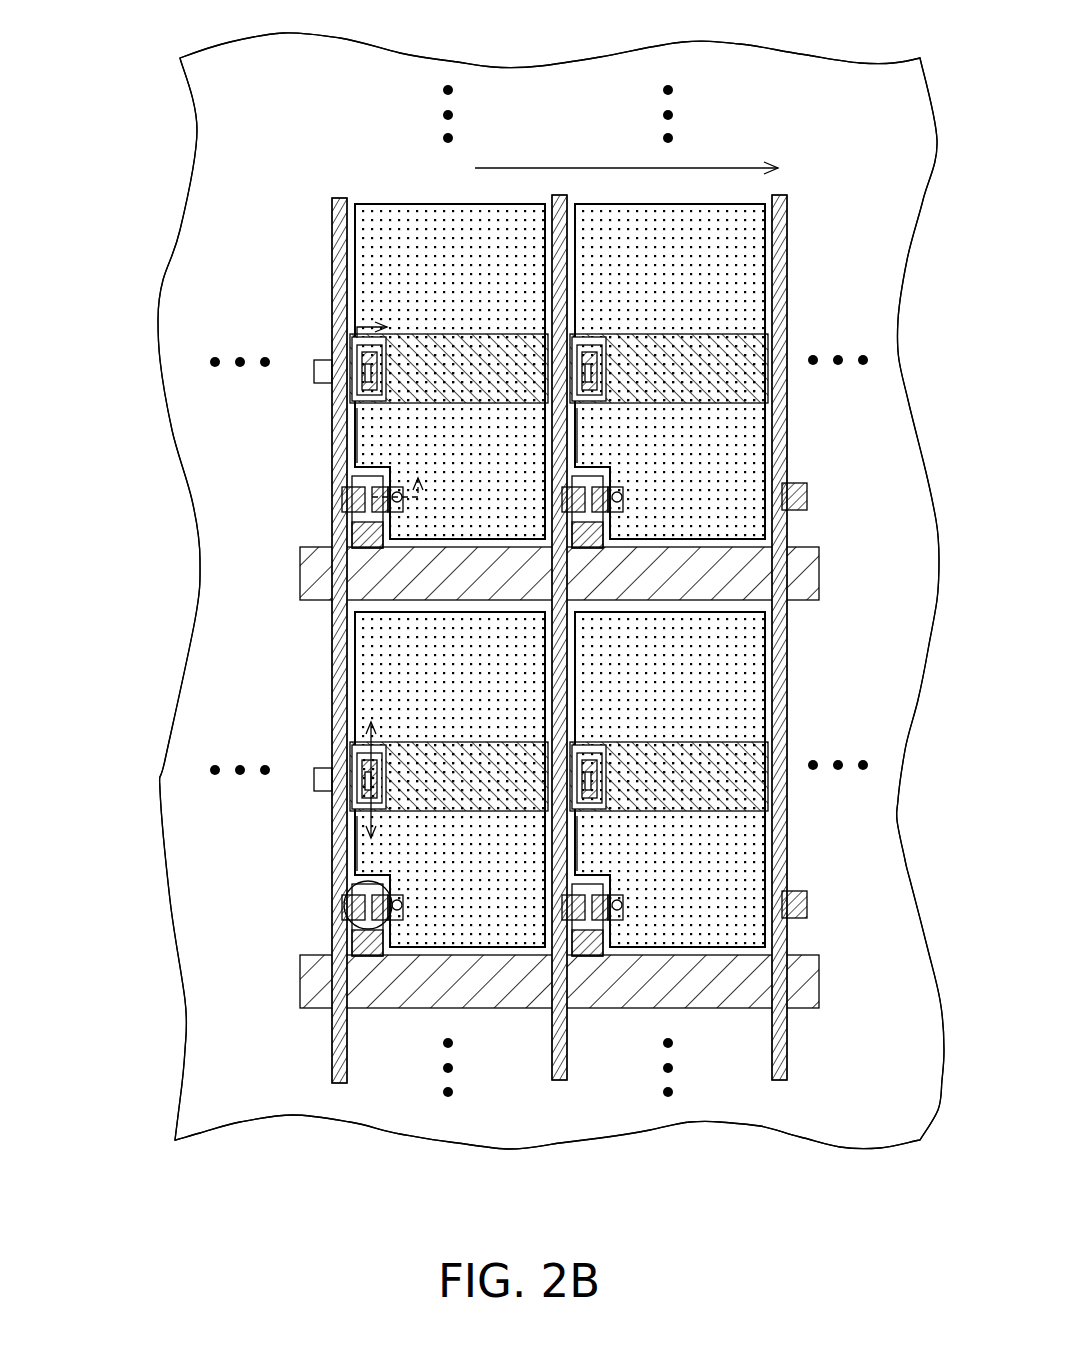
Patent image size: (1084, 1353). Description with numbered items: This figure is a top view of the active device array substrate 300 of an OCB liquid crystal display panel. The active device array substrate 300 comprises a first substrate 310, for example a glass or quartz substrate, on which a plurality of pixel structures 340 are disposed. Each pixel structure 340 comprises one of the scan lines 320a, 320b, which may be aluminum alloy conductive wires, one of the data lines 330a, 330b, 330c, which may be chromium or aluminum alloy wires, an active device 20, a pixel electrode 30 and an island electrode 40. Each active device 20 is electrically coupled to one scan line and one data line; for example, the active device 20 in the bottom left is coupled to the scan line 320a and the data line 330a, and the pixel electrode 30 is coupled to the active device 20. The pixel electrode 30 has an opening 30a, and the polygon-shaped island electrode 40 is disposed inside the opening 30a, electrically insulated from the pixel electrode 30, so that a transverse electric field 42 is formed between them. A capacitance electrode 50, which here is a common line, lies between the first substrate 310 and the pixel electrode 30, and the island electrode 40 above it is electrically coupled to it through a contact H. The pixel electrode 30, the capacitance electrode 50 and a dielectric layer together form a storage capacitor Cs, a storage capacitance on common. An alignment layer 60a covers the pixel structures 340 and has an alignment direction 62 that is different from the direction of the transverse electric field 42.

The alignment layer 60a is at (850, 82).
The alignment direction 62 is at (742, 165).
The active device array substrate 300 is at (510, 707).
The first substrate 310 is at (222, 1097).
The scan line 320a is at (302, 988).
The scan line 320b is at (302, 558).
The data line 330a is at (333, 1032).
The data line 330b is at (560, 1082).
The data line 330c is at (782, 1082).
The pixel structure 340 is at (410, 683).
The storage capacitor Cs is at (433, 772).
The pixel electrode 30 is at (362, 858).
The opening 30a is at (397, 743).
The transverse electric field 42 is at (352, 770).
The capacitance electrode 50 is at (352, 778).
The contact H is at (356, 779).
The island electrode 40 is at (352, 792).
The active device 20 is at (340, 900).